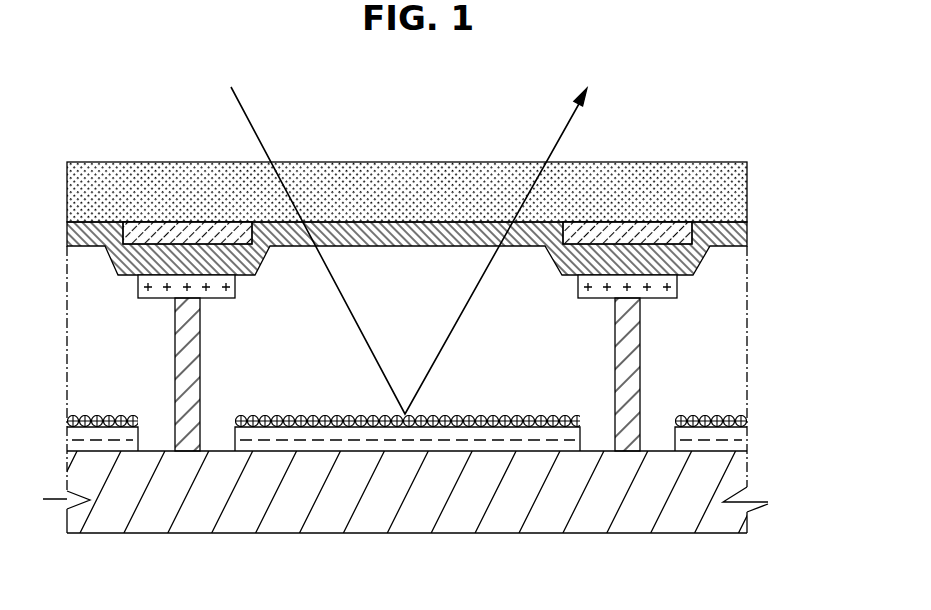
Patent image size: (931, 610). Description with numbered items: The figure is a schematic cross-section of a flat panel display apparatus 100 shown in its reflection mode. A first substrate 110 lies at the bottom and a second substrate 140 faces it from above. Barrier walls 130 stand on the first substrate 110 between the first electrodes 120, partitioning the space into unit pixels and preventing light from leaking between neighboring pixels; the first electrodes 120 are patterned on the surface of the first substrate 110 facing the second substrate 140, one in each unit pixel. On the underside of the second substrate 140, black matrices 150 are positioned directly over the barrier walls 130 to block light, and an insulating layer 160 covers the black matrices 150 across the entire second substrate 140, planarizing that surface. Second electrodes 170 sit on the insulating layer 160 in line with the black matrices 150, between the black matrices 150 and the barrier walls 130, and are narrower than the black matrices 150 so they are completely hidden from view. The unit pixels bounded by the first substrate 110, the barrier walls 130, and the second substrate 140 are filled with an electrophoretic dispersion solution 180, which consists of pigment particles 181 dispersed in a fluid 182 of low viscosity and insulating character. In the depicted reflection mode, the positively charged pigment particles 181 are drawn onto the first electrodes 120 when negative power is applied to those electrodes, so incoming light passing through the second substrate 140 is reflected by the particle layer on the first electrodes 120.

The flat panel display apparatus 100 is at (727, 142).
The first substrate 110 is at (735, 477).
The first electrodes 120 is at (443, 496).
The barrier walls 130 is at (628, 360).
The second substrate 140 is at (737, 197).
The black matrices 150 is at (188, 233).
The insulating layer 160 is at (737, 237).
The second electrodes 170 is at (665, 295).
The electrophoretic dispersion solution 180 is at (405, 343).
The pigment particles 181 is at (250, 427).
The fluid 182 is at (353, 393).